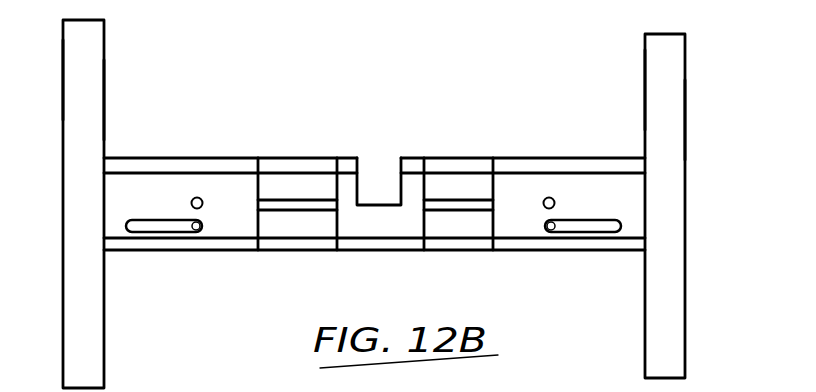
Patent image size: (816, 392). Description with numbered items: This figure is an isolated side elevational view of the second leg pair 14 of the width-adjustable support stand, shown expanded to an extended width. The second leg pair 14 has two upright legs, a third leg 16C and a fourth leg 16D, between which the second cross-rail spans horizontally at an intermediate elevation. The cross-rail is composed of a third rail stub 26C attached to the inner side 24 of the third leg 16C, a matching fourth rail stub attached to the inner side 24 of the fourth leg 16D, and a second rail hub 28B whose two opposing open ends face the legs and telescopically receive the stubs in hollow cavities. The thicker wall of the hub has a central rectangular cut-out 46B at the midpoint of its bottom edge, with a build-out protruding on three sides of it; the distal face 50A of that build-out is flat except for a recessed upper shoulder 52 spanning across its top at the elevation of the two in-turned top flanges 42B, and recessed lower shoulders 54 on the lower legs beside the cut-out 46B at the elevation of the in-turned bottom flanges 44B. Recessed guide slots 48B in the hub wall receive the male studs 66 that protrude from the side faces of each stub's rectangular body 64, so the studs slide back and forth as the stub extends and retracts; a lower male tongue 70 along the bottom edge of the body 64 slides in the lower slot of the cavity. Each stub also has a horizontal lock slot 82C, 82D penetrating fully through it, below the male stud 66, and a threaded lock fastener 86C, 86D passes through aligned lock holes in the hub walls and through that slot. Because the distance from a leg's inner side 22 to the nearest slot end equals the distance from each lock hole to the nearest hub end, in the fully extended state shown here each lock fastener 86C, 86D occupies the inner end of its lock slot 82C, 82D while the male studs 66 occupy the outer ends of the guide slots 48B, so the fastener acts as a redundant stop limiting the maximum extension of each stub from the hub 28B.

The second leg pair 14 is at (700, 73).
The third leg 16C is at (90, 147).
The fourth leg 16D is at (667, 216).
The inner side 22 is at (104, 102).
The inner side 24 is at (63, 72).
The third rail stub 26C is at (180, 170).
The second rail hub 28B is at (273, 156).
The in-turned top flanges 42B is at (270, 247).
The in-turned bottom flanges 44B is at (284, 162).
The central rectangular cut-out 46B is at (380, 153).
The guide slots 48B is at (299, 211).
The distal face 50A is at (412, 228).
The recessed upper shoulder 52 is at (384, 243).
The recessed lower shoulders 54 is at (342, 156).
The rectangular body 64 is at (156, 202).
The male studs 66 is at (202, 199).
The lower male tongue 70 is at (206, 164).
The lock slot 82C is at (152, 229).
The lock slot 82D is at (597, 231).
The lock fastener 86C is at (198, 232).
The lock fastener 86D is at (548, 232).